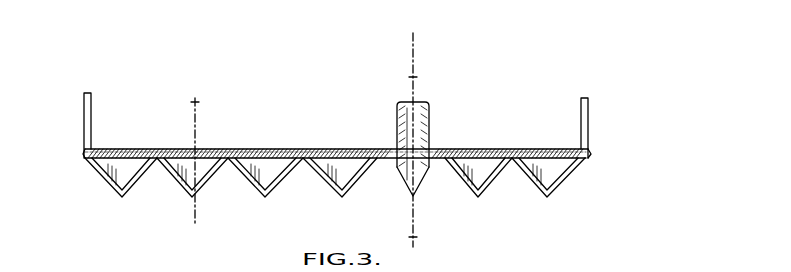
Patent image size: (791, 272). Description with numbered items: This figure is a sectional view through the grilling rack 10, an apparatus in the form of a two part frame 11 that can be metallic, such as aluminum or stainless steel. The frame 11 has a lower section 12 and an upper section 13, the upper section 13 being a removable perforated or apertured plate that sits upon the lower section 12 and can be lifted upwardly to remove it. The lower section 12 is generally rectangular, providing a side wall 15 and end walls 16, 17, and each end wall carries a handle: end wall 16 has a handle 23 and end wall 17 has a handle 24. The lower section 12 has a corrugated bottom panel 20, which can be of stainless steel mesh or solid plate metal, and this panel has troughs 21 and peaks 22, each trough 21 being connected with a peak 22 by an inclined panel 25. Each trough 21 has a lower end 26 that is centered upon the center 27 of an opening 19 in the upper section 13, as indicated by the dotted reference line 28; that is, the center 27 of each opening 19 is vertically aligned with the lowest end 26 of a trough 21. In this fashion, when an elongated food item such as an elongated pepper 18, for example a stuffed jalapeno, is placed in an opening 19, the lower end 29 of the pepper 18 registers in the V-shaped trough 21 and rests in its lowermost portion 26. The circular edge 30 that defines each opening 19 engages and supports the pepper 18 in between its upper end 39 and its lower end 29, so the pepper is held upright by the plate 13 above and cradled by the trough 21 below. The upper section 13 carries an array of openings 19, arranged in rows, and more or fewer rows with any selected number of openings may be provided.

The grilling rack 10 is at (509, 90).
The two part frame 11 is at (145, 148).
The lower section 12 is at (115, 181).
The upper section 13 is at (228, 148).
The side wall 15 is at (259, 183).
The end wall 16 is at (592, 156).
The end wall 17 is at (84, 158).
The elongated pepper 18 is at (400, 123).
The opening 19 is at (272, 146).
The corrugated bottom panel 20 is at (168, 183).
The trough 21 is at (342, 192).
The peak 22 is at (447, 163).
The handle 23 is at (585, 98).
The handle 24 is at (93, 95).
The inclined panel 25 is at (303, 178).
The trough lower end 26 is at (438, 216).
The center of opening 27 is at (191, 148).
The reference line 28 is at (198, 104).
The lower end of pepper 29 is at (410, 197).
The circular edge 30 is at (345, 188).
The upper end of pepper 39 is at (432, 146).